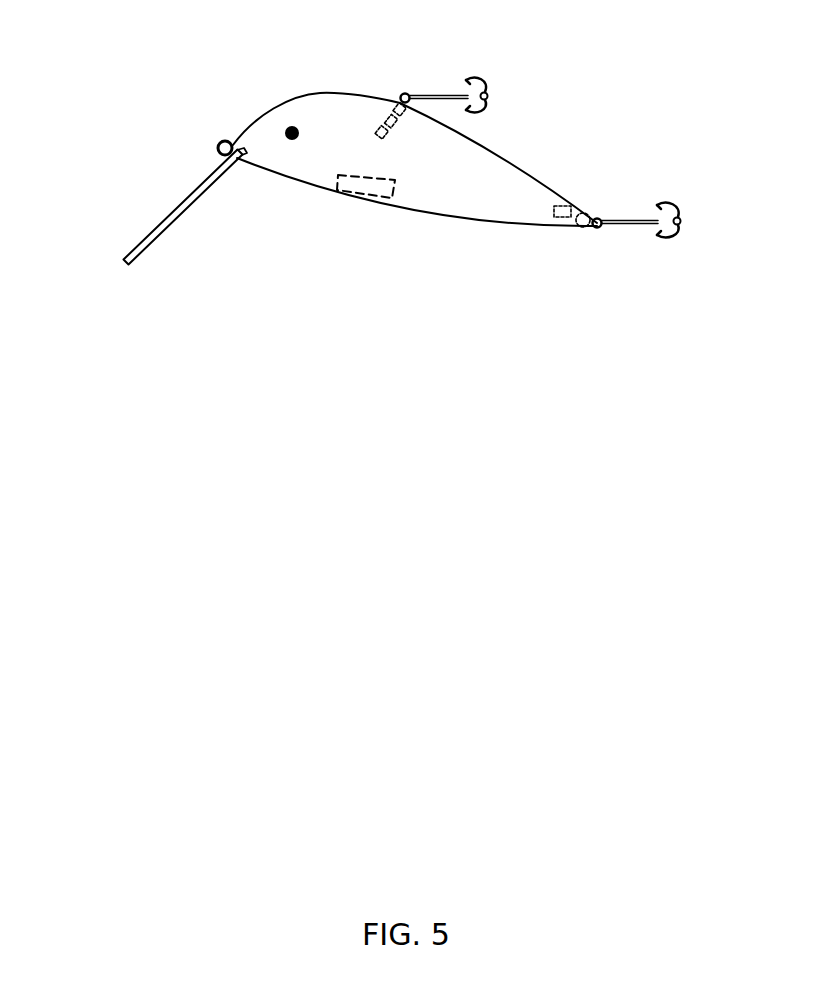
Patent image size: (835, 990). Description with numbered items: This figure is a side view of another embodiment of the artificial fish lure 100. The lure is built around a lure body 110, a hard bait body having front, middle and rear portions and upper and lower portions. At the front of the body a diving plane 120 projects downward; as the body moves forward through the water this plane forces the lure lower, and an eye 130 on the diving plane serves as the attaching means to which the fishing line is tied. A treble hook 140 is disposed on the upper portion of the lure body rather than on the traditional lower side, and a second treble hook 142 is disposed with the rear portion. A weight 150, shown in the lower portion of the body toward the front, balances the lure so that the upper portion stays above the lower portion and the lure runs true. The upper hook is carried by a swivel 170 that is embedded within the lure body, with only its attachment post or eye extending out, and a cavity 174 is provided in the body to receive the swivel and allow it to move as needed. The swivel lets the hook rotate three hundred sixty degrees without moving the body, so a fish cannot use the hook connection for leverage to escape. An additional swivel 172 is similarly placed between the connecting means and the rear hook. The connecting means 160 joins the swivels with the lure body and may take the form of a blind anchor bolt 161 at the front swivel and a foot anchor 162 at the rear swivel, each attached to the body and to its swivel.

The artificial fish lure 100 is at (329, 296).
The lure body 110 is at (507, 157).
The diving plane 120 is at (132, 247).
The eye 130 is at (217, 143).
The treble hook 140 is at (480, 82).
The second treble hook 142 is at (675, 207).
The weight 150 is at (363, 192).
The connecting means 160 is at (446, 178).
The blind anchor bolt 161 is at (377, 137).
The foot anchor 162 is at (553, 208).
The swivel 170 is at (393, 98).
The additional swivel 172 is at (580, 210).
The cavity 174 is at (397, 102).